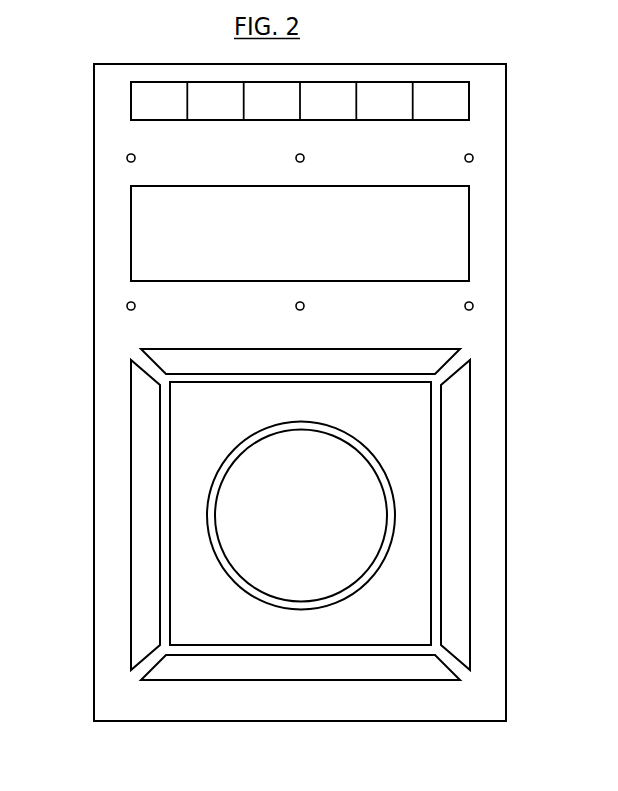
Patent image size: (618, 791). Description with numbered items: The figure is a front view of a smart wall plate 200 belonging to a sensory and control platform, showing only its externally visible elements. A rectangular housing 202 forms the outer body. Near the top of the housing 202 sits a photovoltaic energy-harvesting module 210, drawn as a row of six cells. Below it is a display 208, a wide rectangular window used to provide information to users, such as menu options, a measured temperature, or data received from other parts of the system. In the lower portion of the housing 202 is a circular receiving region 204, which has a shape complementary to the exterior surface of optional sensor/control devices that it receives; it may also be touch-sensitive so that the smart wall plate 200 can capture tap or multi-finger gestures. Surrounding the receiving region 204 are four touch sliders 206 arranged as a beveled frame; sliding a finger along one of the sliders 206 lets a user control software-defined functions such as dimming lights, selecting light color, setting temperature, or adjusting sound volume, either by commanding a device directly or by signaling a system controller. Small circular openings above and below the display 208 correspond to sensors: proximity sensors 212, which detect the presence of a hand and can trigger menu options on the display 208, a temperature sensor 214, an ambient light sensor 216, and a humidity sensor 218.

The smart wall plate 200 is at (538, 236).
The housing 202 is at (508, 98).
The receiving region 204 is at (280, 520).
The touch sliders 206 is at (142, 458).
The display 208 is at (277, 242).
The photovoltaic energy-harvesting module 210 is at (432, 82).
The proximity sensors 212 is at (127, 160).
The temperature sensor 214 is at (127, 308).
The ambient light sensor 216 is at (296, 308).
The humidity sensor 218 is at (473, 309).